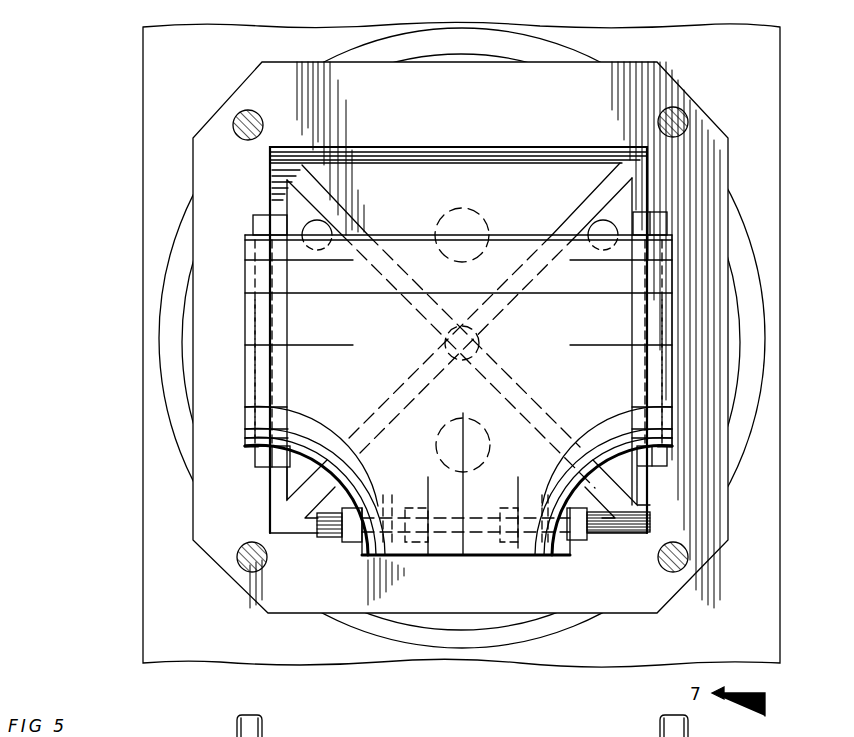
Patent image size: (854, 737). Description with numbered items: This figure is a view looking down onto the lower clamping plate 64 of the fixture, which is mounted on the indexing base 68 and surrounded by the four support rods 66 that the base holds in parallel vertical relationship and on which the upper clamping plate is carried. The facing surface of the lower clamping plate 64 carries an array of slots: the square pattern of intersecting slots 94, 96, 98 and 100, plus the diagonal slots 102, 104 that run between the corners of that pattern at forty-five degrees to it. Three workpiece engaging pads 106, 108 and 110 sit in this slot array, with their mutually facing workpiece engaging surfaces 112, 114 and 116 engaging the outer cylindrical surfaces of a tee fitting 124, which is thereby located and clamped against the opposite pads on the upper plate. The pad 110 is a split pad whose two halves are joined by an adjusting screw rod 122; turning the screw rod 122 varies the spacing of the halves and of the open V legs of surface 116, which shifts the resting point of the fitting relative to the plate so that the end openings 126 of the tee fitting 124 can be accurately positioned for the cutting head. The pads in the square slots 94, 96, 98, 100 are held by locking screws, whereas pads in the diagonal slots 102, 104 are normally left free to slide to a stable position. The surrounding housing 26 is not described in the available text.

The housing 26 is at (158, 575).
The lower clamping plate 64 is at (208, 138).
The support rods 66 is at (245, 112).
The indexing base 68 is at (168, 268).
The slot 94 is at (485, 150).
The slot 96 is at (645, 487).
The slot 98 is at (600, 542).
The slot 100 is at (283, 484).
The diagonal slot 102 is at (590, 212).
The diagonal slot 104 is at (350, 213).
The workpiece engaging pad 106 is at (347, 545).
The workpiece engaging pad 108 is at (667, 454).
The split pad 110 is at (258, 225).
The workpiece engaging surface 112 is at (417, 476).
The workpiece engaging surface 114 is at (655, 352).
The split V workpiece engaging surface 116 is at (268, 402).
The adjusting screw rod 122 is at (482, 522).
The tee fitting 124 is at (564, 332).
The end openings 126 is at (463, 556).